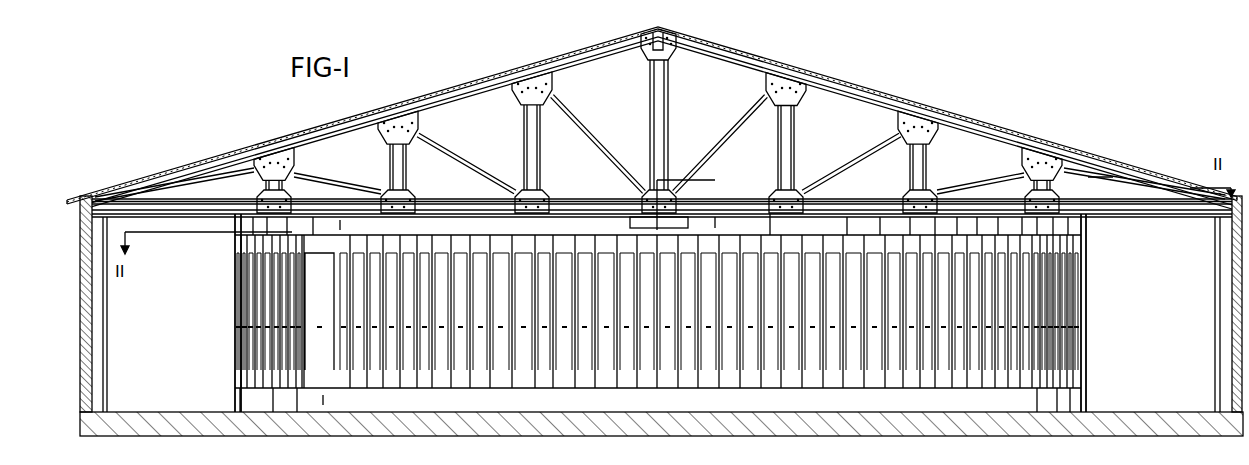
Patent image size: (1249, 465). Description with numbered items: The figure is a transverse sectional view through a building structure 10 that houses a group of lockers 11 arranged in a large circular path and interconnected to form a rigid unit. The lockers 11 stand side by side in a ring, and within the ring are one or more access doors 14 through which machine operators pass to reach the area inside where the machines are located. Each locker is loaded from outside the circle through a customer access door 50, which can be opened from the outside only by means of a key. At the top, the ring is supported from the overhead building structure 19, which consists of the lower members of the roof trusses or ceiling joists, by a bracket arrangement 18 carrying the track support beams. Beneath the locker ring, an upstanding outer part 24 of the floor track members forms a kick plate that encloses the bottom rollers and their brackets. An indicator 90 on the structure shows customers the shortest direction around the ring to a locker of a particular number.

The building structure 10 is at (1127, 156).
The lockers 11 is at (243, 363).
The access door 14 is at (310, 288).
The bracket arrangement 18 is at (306, 190).
The overhead building structure 19 is at (433, 206).
The upstanding outer part 24 is at (1088, 394).
The customer access door 50 is at (362, 358).
The indicator 90 is at (688, 222).